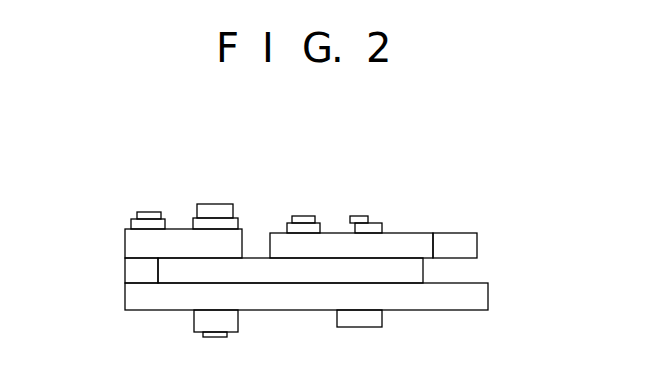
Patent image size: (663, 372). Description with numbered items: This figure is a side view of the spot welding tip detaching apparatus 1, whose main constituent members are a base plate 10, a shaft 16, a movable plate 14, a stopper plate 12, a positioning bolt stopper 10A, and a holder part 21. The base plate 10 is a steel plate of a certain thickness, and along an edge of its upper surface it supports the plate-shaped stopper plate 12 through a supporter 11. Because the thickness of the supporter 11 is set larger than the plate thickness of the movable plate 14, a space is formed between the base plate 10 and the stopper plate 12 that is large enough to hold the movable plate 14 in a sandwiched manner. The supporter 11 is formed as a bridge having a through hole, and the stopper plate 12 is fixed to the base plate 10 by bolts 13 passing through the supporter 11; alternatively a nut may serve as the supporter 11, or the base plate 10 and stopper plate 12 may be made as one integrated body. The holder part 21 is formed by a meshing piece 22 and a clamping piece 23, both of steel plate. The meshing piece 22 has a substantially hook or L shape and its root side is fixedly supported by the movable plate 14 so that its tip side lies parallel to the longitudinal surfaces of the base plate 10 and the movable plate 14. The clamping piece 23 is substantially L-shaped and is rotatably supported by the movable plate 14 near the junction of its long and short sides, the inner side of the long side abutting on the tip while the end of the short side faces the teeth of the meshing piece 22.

The spot welding tip detaching apparatus 1 is at (424, 167).
The base plate 10 is at (130, 298).
The positioning bolt stopper 10A is at (365, 217).
The supporter 11 is at (130, 270).
The stopper plate 12 is at (130, 241).
The bolt 13 is at (147, 216).
The movable plate 14 is at (387, 275).
The shaft 16 is at (213, 216).
The holder part 21 is at (502, 245).
The meshing piece 22 is at (325, 246).
The clamping piece 23 is at (455, 240).